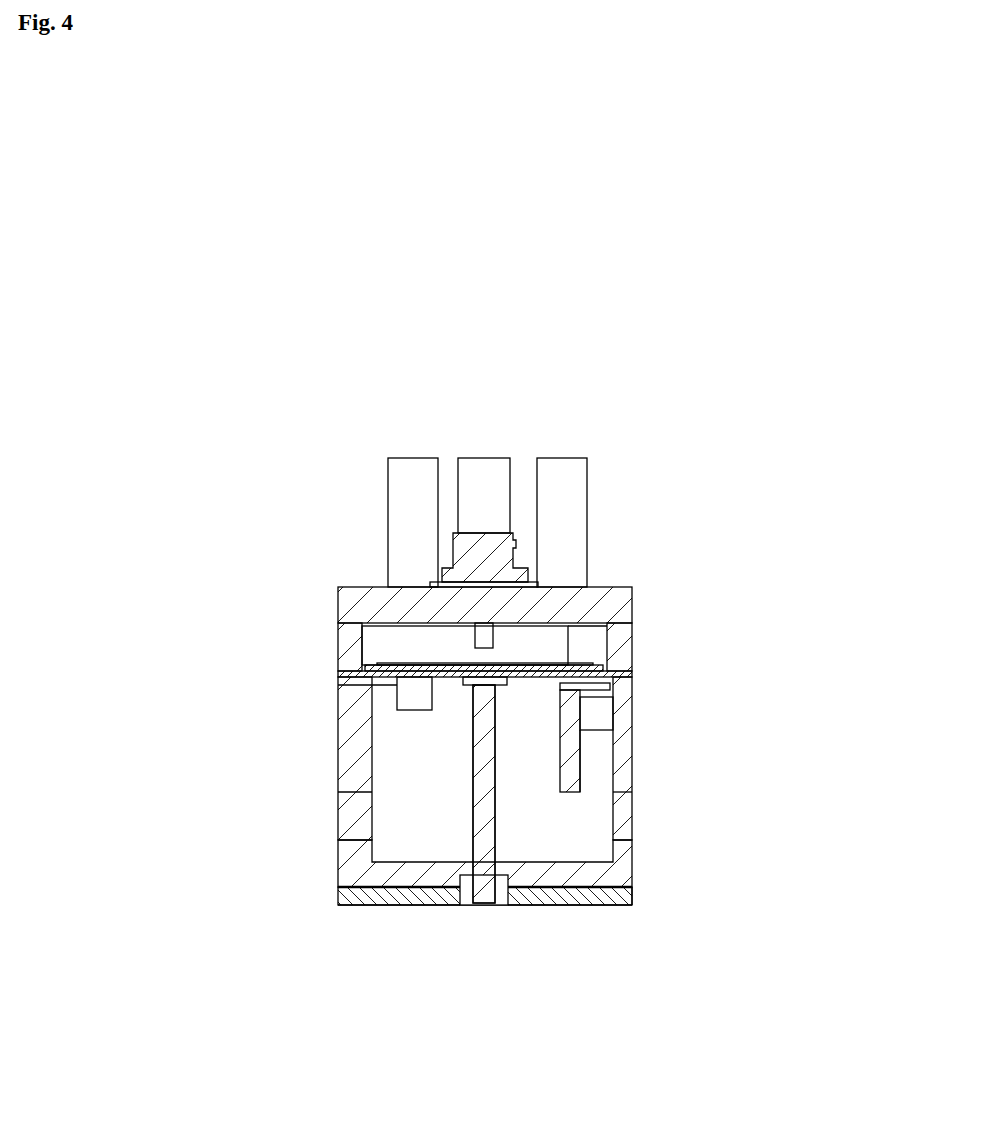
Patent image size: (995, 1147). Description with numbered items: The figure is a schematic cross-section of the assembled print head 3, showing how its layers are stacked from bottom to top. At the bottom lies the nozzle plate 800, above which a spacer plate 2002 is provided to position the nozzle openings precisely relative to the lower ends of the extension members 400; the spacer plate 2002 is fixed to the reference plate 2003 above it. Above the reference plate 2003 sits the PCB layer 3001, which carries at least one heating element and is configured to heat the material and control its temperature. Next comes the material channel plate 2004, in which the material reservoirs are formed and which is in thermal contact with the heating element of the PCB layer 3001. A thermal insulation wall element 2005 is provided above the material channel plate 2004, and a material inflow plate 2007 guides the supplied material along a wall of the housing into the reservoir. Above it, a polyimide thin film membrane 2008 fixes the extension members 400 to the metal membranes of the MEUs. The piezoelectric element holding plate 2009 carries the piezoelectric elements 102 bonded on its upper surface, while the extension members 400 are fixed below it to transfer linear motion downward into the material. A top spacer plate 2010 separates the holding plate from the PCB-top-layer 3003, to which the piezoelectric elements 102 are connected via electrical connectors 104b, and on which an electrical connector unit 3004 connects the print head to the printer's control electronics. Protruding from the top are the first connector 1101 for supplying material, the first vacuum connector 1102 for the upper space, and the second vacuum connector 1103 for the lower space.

The print head 3 is at (493, 402).
The first connector 1101 is at (588, 460).
The first vacuum connector 1102 is at (492, 460).
The second vacuum connector 1103 is at (432, 460).
The electrical connector unit 3004 is at (453, 547).
The PCB-top-layer 3003 is at (618, 587).
The electrical connectors 104b is at (570, 635).
The piezoelectric element 102 is at (580, 667).
The top spacer plate 2010 is at (337, 640).
The piezoelectric element holding plate 2009 is at (337, 672).
The extension member 400 is at (472, 690).
The polyimide thin film membrane 2008 is at (583, 675).
The material inflow plate 2007 is at (613, 752).
The thermal insulation wall element 2005 is at (632, 822).
The material channel plate 2004 is at (337, 874).
The reference plate 2003 is at (337, 893).
The PCB layer 3001 is at (632, 887).
The spacer plate 2002 is at (632, 905).
The nozzle plate 800 is at (337, 905).